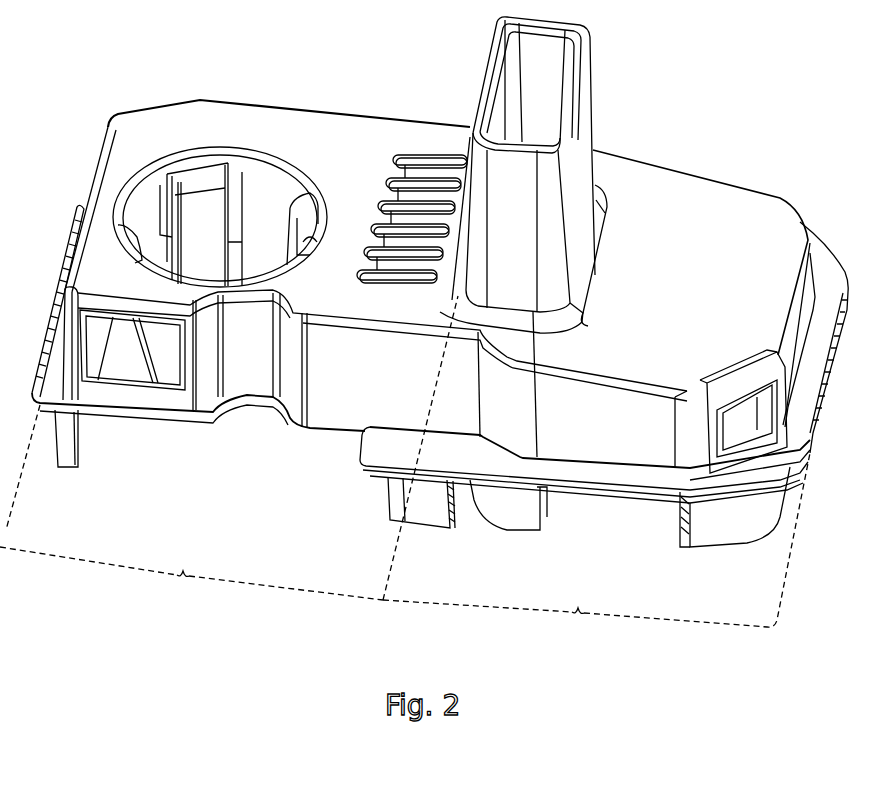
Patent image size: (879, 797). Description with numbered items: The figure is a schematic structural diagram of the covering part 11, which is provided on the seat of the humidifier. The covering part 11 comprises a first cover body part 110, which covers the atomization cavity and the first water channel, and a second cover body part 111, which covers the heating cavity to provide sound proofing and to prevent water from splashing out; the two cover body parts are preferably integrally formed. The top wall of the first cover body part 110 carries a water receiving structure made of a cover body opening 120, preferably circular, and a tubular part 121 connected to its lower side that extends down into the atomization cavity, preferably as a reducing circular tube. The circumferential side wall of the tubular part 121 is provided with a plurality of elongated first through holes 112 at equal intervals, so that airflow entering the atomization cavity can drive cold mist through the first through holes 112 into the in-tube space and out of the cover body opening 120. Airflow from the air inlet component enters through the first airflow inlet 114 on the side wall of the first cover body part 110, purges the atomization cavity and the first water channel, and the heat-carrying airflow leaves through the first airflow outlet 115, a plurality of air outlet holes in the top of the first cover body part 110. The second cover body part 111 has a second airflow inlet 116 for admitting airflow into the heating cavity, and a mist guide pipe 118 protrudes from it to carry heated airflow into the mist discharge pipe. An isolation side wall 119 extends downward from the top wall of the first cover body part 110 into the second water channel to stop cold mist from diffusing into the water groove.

The covering part 11 is at (424, 333).
The first cover body part 110 is at (229, 453).
The second cover body part 111 is at (596, 551).
The first through hole 112 is at (200, 213).
The first airflow inlet 114 is at (177, 398).
The first airflow outlet 115 is at (427, 156).
The second airflow inlet 116 is at (700, 477).
The mist guide pipe 118 is at (593, 110).
The isolation side wall 119 is at (82, 448).
The cover body opening 120 is at (125, 187).
The tubular part 121 is at (268, 210).